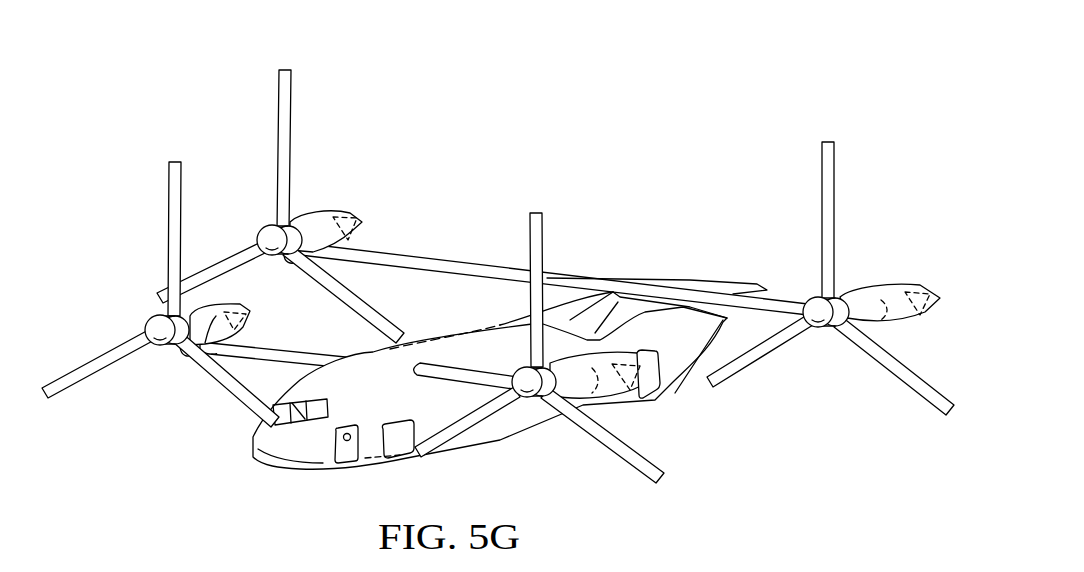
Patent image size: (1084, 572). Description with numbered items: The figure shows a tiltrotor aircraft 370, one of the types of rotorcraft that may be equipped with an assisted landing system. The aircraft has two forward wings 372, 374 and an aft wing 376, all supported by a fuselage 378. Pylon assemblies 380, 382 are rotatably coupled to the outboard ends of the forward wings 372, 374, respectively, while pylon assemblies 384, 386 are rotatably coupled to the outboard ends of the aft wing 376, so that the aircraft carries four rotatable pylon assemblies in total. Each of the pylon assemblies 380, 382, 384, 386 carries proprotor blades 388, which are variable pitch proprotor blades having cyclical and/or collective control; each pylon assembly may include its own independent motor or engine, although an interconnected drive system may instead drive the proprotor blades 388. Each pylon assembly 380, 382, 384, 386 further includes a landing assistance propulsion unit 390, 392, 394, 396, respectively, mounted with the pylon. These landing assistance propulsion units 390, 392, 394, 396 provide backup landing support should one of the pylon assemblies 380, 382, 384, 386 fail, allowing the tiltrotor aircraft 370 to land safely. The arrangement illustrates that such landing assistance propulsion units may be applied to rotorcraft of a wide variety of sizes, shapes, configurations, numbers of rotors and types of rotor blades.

The tiltrotor aircraft 370 is at (672, 112).
The forward wing 372 is at (447, 366).
The forward wing 374 is at (284, 343).
The aft wing 376 is at (398, 254).
The fuselage 378 is at (294, 472).
The pylon assembly 380 is at (555, 358).
The pylon assembly 382 is at (236, 306).
The pylon assembly 384 is at (887, 284).
The pylon assembly 386 is at (313, 213).
The proprotor blades 388 is at (171, 187).
The landing assistance propulsion unit 390 is at (664, 394).
The landing assistance propulsion unit 392 is at (215, 364).
The landing assistance propulsion unit 394 is at (925, 322).
The landing assistance propulsion unit 396 is at (353, 213).